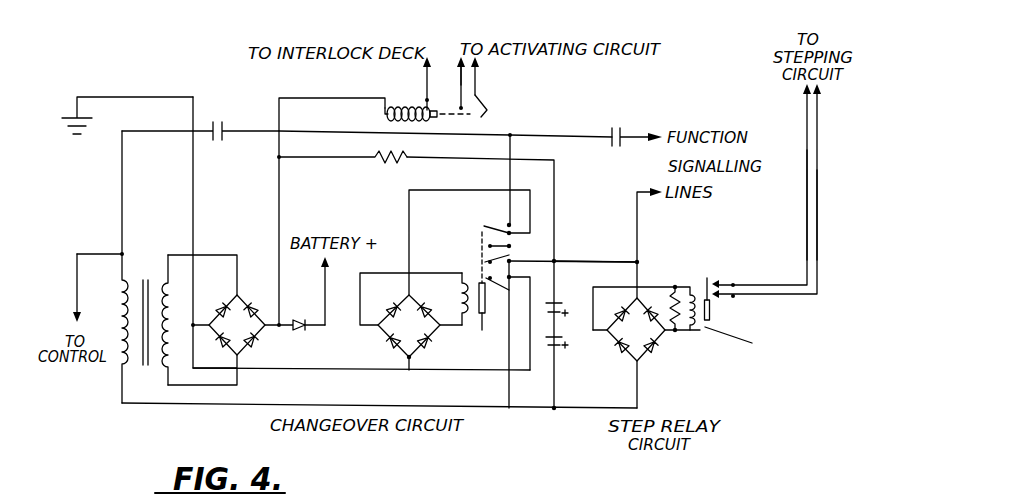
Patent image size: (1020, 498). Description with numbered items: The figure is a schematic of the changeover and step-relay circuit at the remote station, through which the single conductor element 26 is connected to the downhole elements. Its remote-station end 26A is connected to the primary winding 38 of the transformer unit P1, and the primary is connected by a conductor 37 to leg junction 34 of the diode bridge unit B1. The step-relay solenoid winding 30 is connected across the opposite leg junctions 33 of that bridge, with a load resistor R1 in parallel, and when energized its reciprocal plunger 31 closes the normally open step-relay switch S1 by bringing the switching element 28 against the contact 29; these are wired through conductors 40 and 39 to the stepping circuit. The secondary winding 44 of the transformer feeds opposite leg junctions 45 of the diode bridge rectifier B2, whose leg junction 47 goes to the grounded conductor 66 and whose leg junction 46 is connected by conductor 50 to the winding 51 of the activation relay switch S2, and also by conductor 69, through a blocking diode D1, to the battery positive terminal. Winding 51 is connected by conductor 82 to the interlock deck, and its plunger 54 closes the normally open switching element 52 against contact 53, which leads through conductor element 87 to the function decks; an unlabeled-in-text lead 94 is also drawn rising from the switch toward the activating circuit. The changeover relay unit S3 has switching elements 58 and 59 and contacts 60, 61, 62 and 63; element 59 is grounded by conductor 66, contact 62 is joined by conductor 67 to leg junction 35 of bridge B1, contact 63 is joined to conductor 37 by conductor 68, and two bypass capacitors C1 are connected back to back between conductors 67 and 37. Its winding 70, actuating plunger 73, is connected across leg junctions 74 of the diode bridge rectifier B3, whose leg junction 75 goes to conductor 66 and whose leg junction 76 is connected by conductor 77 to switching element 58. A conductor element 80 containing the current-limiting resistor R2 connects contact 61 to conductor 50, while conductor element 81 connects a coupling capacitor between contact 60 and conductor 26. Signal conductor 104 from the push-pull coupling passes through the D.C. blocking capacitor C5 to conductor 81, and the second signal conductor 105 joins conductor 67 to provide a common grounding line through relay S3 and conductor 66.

The single conductor element 26 is at (76, 272).
The remote-station end 26A is at (121, 252).
The primary winding 38 is at (122, 300).
The transformer unit P1 is at (110, 377).
The secondary winding 44 is at (190, 286).
The diode bridge rectifier B2 is at (239, 303).
The leg junctions 45 is at (240, 294).
The leg junction 46 is at (266, 318).
The leg junction 47 is at (210, 332).
The conductor 66 is at (193, 187).
The conductor 37 is at (422, 405).
The diode D1 is at (299, 319).
The conductor 69 is at (326, 306).
The conductor 50 is at (278, 112).
The conductor element 81 is at (299, 132).
The winding 51 is at (392, 106).
The plunger 54 is at (455, 115).
The conductor 82 is at (427, 72).
The contact 53 is at (460, 103).
The conductor element 87 is at (459, 62).
The switch lead 94 is at (478, 70).
The switching element 52 is at (483, 96).
The activation relay switch S2 is at (512, 87).
The current-limiting resistor R2 is at (385, 163).
The conductor element 80 is at (560, 172).
The conductor 77 is at (410, 206).
The changeover relay unit S3 is at (537, 228).
The contact 60 is at (507, 222).
The contact 61 is at (486, 226).
The switching element 58 is at (510, 230).
The switching element 59 is at (484, 263).
The contact 62 is at (500, 253).
The contact 63 is at (497, 282).
The conductor 68 is at (510, 393).
The plunger 73 is at (492, 318).
The diode bridge rectifier B3 is at (413, 307).
The leg junction 76 is at (407, 295).
The leg junctions 74 is at (380, 330).
The leg junction 75 is at (414, 357).
The winding 70 is at (461, 291).
The bypass capacitors C1 is at (553, 322).
The D.C. blocking capacitor C5 is at (611, 128).
The signal conductor 104 is at (634, 135).
The signal conductor 105 is at (637, 212).
The conductor 67 is at (591, 262).
The diode bridge unit B1 is at (660, 336).
The leg junction 35 is at (640, 297).
The leg junctions 33 is at (610, 333).
The leg junction 34 is at (640, 362).
The load resistor R1 is at (687, 288).
The step-relay switch S1 is at (759, 220).
The plunger 31 is at (711, 313).
The switching element 28 is at (735, 284).
The contact 29 is at (735, 297).
The solenoid winding 30 is at (740, 341).
The conductor 40 is at (806, 148).
The conductor 39 is at (818, 172).